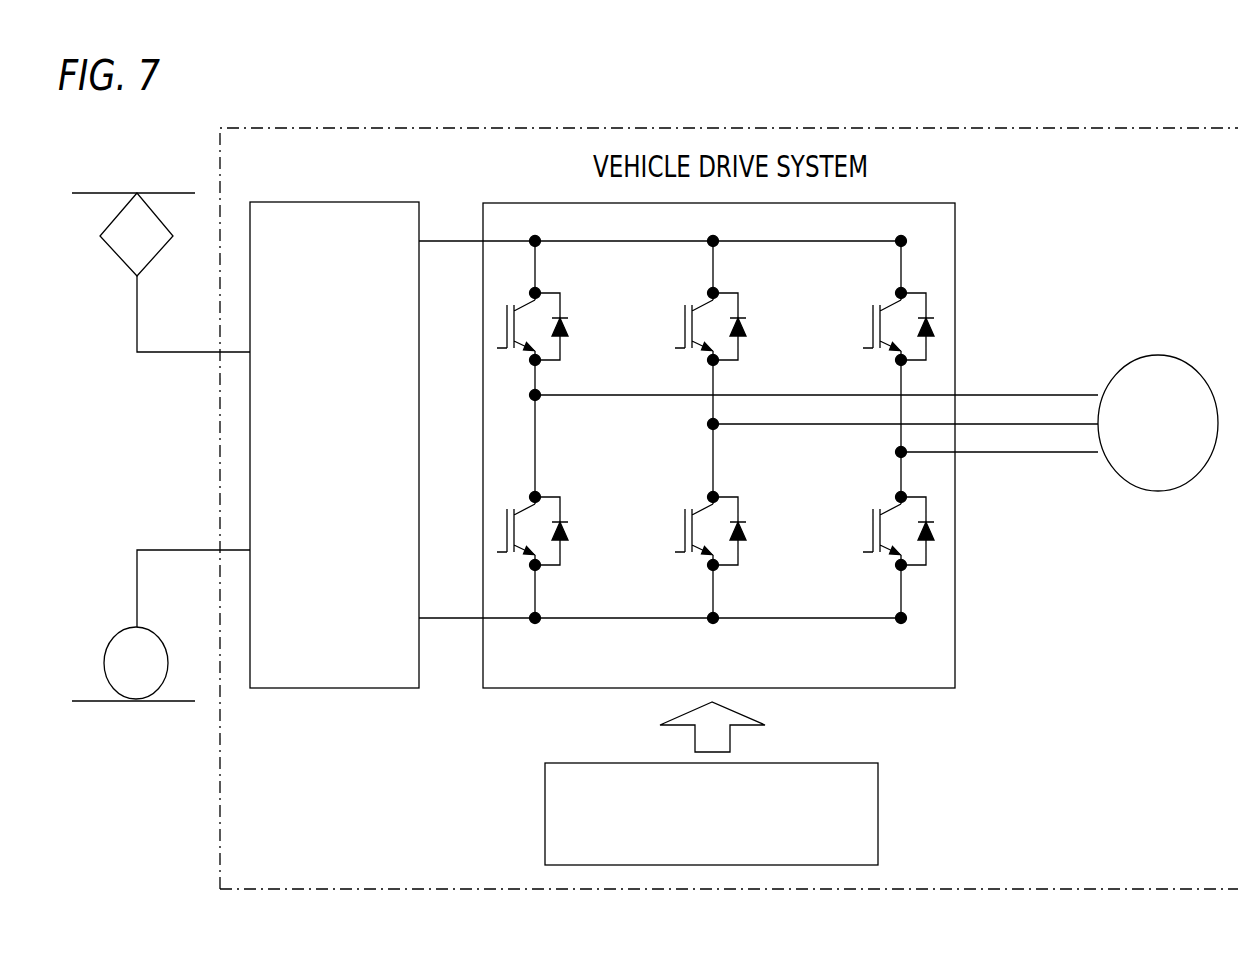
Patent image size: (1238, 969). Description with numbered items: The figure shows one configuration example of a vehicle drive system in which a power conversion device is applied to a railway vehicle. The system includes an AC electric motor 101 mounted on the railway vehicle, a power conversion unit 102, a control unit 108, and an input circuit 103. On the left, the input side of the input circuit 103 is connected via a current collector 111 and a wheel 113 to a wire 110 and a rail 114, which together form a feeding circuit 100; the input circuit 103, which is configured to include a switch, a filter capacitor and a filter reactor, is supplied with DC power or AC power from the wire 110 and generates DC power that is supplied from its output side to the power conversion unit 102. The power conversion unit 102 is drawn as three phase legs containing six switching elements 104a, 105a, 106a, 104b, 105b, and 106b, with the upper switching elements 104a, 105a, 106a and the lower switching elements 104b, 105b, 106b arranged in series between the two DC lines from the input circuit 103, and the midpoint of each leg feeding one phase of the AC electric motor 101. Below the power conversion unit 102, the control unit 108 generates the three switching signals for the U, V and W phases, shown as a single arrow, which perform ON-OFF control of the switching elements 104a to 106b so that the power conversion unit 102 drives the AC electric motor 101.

The feeding circuit 100 is at (93, 465).
The AC electric motor 101 is at (1140, 492).
The power conversion unit 102 is at (758, 417).
The input circuit 103 is at (330, 202).
The switching element 104a is at (558, 310).
The switching element 104b is at (558, 517).
The switching element 105a is at (737, 310).
The switching element 105b is at (737, 517).
The switching element 106a is at (925, 312).
The switching element 106b is at (925, 516).
The control unit 108 is at (878, 815).
The wire 110 is at (100, 193).
The current collector 111 is at (112, 252).
The wheel 113 is at (120, 628).
The rail 114 is at (110, 703).